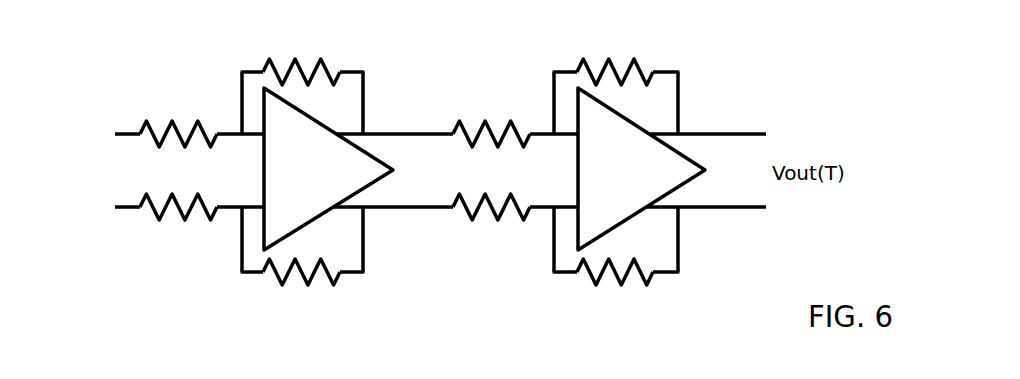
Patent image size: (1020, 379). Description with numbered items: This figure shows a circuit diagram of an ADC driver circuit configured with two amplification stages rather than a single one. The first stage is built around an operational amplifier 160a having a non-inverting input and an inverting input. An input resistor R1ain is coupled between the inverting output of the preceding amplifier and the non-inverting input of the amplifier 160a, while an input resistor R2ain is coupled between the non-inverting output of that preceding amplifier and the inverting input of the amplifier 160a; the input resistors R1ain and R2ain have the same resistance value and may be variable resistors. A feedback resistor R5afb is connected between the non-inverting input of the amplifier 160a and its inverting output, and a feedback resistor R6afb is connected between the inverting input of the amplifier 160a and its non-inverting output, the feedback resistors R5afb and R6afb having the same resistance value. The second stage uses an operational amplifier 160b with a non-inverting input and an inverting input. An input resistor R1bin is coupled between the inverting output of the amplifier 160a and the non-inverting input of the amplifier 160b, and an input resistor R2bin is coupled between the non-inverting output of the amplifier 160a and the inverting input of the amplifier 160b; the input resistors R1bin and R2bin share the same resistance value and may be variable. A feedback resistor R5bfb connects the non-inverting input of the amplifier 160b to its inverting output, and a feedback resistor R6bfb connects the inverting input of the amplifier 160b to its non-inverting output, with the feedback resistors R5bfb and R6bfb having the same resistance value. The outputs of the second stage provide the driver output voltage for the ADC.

The operational amplifier 160a is at (293, 182).
The operational amplifier 160b is at (607, 182).
The input resistor R1ain is at (178, 119).
The input resistor R2ain is at (178, 221).
The feedback resistor R5afb is at (301, 55).
The feedback resistor R6afb is at (301, 285).
The input resistor R1bin is at (491, 119).
The input resistor R2bin is at (491, 221).
The feedback resistor R5bfb is at (615, 55).
The feedback resistor R6bfb is at (615, 285).